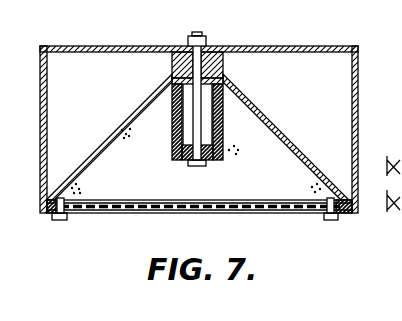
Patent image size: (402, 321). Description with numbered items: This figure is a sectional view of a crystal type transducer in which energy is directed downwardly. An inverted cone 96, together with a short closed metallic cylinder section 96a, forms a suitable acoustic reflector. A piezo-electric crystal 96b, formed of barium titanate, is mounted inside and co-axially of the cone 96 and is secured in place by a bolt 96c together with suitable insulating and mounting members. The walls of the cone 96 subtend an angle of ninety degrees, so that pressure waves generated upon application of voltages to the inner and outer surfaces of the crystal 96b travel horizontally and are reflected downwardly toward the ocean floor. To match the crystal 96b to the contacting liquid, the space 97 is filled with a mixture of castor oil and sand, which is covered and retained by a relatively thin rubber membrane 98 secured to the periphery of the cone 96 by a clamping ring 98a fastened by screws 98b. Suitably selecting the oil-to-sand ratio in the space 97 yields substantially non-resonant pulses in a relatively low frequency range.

The inverted cone 96 is at (265, 124).
The short closed metallic cylinder section 96a is at (296, 39).
The piezo-electric crystal 96b is at (222, 128).
The bolt 96c is at (203, 41).
The space 97 is at (238, 189).
The rubber membrane 98 is at (222, 211).
The clamping ring 98a is at (347, 213).
The screws 98b is at (63, 220).